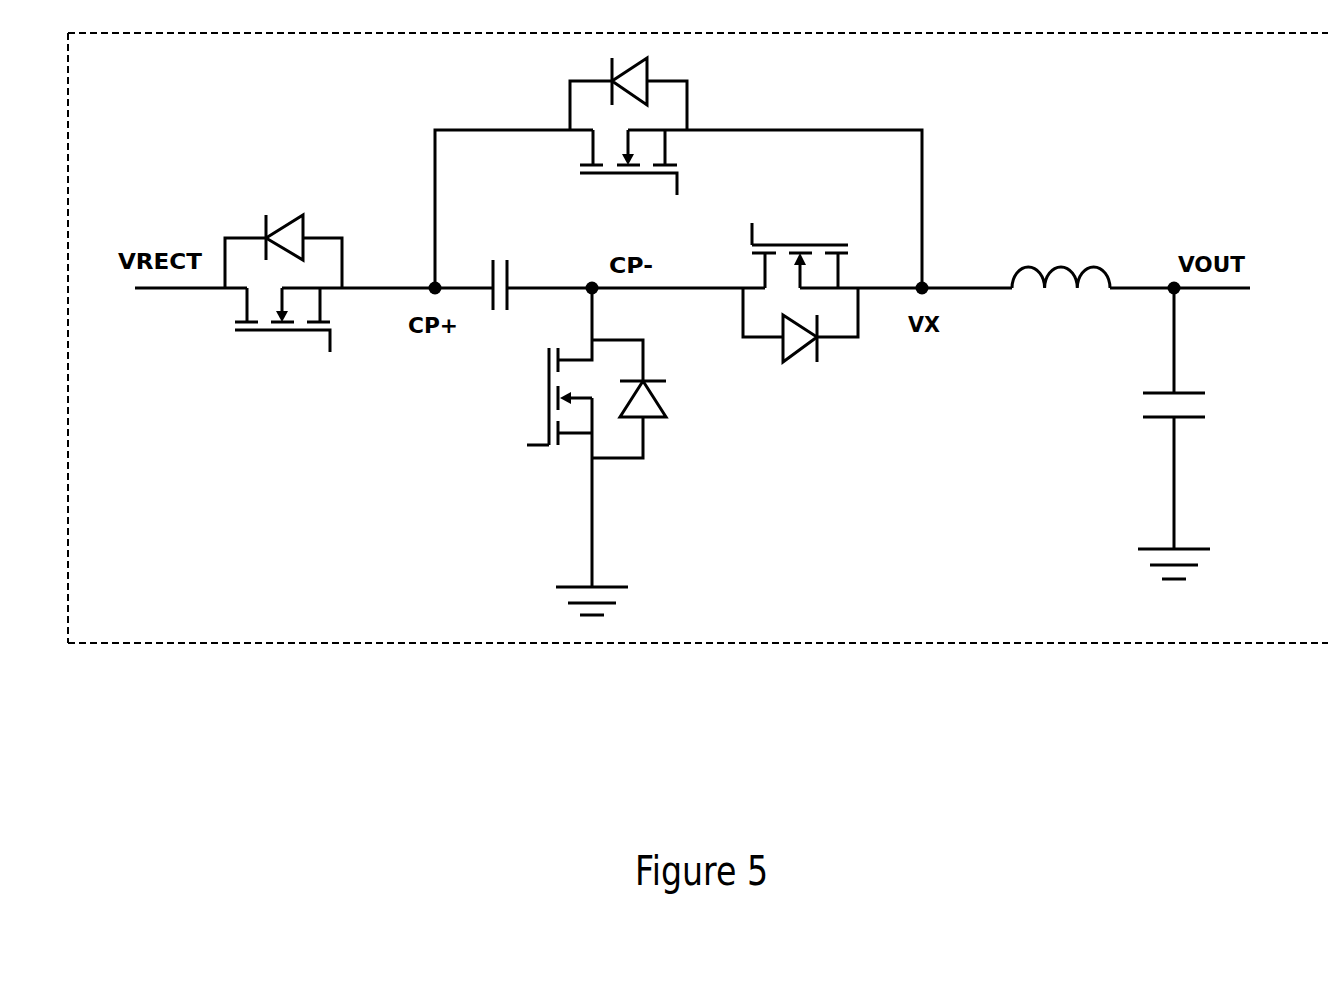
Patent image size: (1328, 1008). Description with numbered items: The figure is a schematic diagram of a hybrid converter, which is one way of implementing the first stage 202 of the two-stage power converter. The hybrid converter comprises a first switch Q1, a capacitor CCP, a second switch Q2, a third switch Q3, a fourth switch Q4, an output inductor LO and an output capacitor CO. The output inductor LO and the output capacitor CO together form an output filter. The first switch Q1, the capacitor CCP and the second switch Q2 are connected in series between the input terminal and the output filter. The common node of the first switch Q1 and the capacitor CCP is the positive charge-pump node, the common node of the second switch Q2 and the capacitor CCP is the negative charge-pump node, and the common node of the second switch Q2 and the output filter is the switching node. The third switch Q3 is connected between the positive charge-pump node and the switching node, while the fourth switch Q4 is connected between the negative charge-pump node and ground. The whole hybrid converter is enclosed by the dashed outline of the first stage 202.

The first stage 202 is at (1320, 630).
The first switch Q1 is at (283, 300).
The second switch Q2 is at (800, 282).
The third switch Q3 is at (628, 139).
The fourth switch Q4 is at (583, 451).
The capacitor CCP is at (500, 264).
The output inductor LO is at (1061, 259).
The output capacitor CO is at (1195, 433).